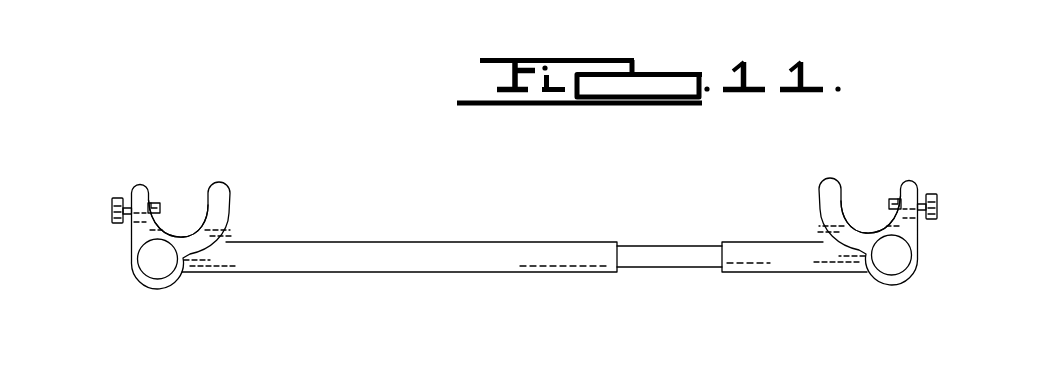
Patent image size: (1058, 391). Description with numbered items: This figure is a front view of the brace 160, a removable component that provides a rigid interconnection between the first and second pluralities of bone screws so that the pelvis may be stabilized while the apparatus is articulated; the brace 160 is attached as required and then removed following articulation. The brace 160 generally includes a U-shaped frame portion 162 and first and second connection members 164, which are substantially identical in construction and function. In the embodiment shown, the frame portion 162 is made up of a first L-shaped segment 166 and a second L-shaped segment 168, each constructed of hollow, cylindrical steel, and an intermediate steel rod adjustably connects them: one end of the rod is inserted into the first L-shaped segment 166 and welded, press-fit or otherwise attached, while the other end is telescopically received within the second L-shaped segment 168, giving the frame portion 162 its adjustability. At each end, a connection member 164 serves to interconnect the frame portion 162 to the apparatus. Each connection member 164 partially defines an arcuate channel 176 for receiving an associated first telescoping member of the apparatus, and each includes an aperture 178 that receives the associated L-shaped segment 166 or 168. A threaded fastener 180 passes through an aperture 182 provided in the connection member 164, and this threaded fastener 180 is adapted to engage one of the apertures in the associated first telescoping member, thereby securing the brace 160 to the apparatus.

The brace 160 is at (509, 233).
The U-shaped frame portion 162 is at (587, 300).
The connection member 164 is at (524, 196).
The first L-shaped segment 166 is at (399, 299).
The second L-shaped segment 168 is at (794, 297).
The arcuate channel 176 is at (525, 210).
The aperture 178 is at (525, 303).
The threaded fastener 180 is at (509, 159).
The aperture 182 is at (524, 160).